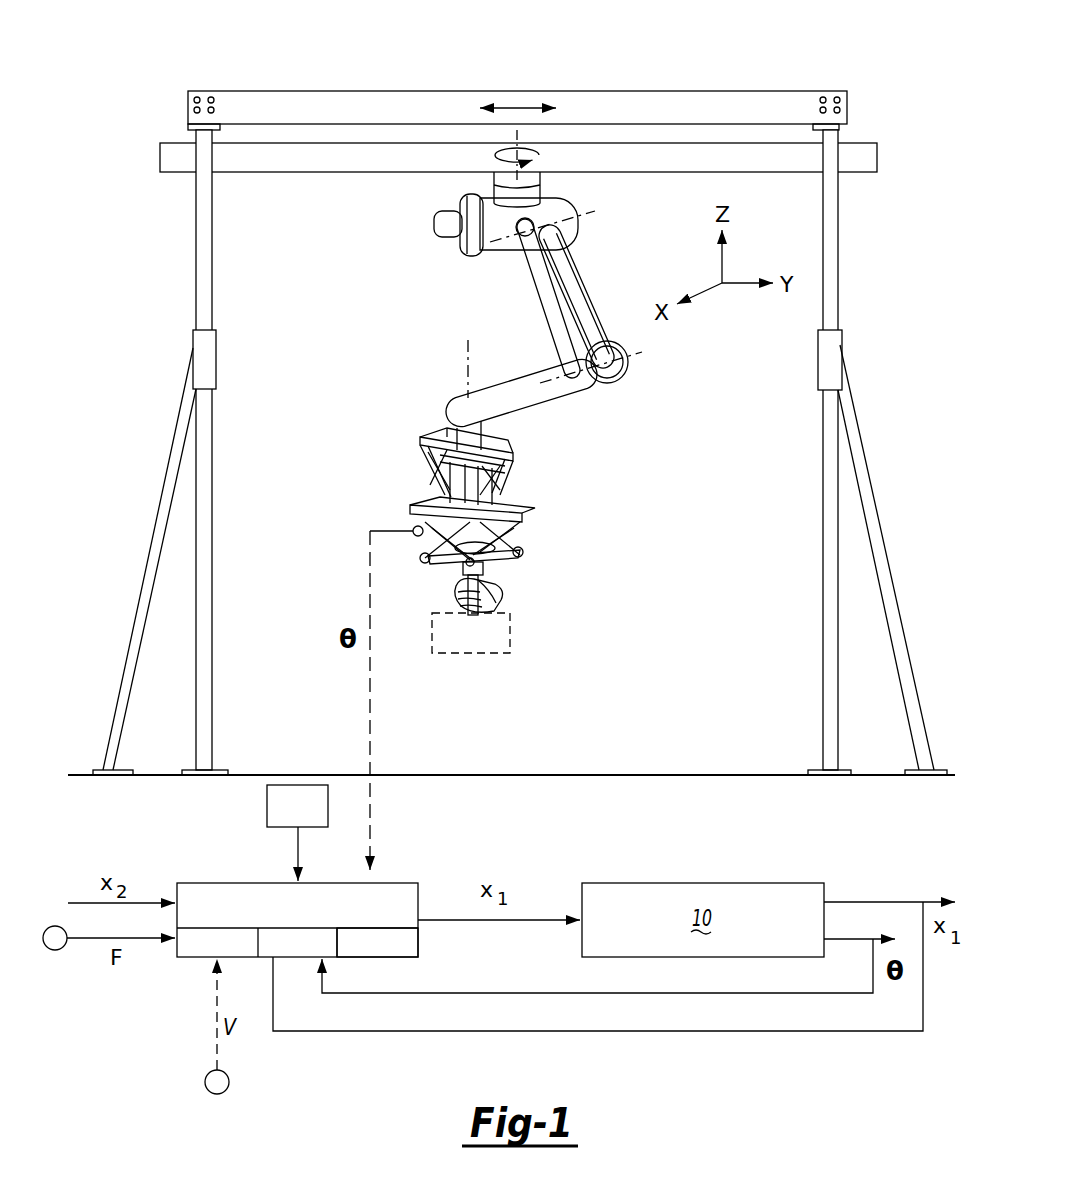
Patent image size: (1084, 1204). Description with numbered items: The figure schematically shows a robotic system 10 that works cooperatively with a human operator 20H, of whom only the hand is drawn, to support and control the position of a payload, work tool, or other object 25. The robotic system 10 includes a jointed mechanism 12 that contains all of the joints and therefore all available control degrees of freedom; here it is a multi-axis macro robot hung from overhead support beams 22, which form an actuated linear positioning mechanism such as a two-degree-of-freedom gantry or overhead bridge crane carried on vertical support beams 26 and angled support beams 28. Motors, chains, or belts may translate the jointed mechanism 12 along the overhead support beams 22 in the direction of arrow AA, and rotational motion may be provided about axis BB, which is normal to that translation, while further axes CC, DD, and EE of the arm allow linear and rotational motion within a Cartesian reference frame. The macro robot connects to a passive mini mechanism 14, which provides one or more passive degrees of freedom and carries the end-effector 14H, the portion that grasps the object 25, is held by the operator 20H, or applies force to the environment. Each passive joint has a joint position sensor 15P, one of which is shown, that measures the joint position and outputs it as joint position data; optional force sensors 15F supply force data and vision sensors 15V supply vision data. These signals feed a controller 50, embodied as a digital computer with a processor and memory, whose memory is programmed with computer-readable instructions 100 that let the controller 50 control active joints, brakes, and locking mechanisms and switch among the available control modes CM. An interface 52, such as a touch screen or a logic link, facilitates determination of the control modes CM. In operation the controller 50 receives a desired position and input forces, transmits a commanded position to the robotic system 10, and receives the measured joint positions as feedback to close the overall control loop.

The robotic system 10 is at (124, 116).
The overhead support beams 22 is at (716, 100).
The jointed mechanism 12 is at (505, 328).
The mini mechanism 14 is at (400, 464).
The vertical support beams 26 is at (212, 485).
The angled support beams 28 is at (148, 558).
The joint position sensor 15P is at (415, 527).
The end-effector 14H is at (462, 580).
The human operator 20H is at (493, 588).
The object 25 is at (481, 647).
The interface 52 is at (306, 820).
The controller 50 is at (378, 883).
The computer-readable instructions 100 is at (377, 940).
The force sensors 15F is at (58, 950).
The vision sensors 15V is at (219, 1094).
The direction of translation AA is at (517, 106).
The rotation axis BB is at (520, 133).
The joint axis CC is at (595, 216).
The joint axis DD is at (640, 356).
The joint axis EE is at (468, 346).
The control modes CM is at (298, 848).